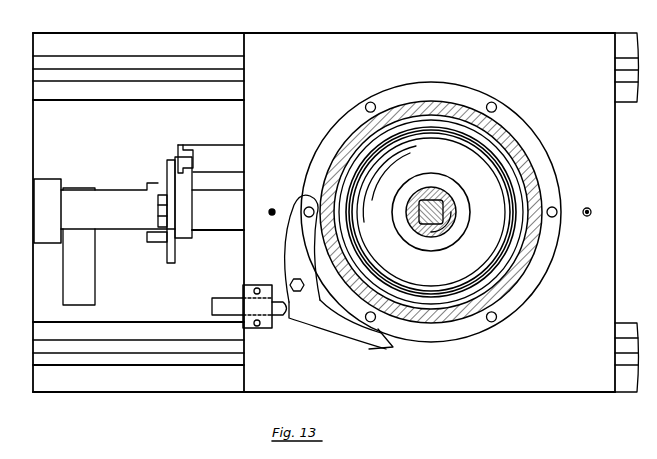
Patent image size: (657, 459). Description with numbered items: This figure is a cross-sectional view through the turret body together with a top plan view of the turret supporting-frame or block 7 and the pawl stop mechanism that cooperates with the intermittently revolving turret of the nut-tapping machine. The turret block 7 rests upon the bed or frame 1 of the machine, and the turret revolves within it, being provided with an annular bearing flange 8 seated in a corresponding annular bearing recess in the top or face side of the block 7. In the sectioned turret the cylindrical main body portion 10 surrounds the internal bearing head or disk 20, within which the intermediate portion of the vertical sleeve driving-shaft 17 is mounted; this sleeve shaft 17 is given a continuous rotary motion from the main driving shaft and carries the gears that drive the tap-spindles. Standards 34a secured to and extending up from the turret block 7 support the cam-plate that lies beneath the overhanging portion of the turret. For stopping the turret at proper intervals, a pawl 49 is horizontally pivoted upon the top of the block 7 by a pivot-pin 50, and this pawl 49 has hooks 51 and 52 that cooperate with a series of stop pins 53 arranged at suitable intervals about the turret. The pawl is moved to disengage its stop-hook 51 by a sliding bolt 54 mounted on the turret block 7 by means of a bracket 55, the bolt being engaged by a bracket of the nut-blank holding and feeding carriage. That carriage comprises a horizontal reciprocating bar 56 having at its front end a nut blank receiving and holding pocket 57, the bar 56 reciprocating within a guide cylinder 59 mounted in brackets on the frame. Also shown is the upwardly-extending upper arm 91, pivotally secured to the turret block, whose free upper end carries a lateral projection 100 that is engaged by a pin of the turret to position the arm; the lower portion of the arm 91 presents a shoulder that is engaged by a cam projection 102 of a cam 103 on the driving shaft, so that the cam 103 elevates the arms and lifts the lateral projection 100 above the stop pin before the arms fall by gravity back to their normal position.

The bed or frame 1 is at (128, 38).
The turret supporting-frame or block 7 is at (605, 253).
The annular bearing flange 8 is at (552, 191).
The cylindrical main body portion 10 is at (530, 172).
The vertical sleeve driving-shaft 17 is at (437, 241).
The internal bearing head or disk 20 is at (497, 258).
The standards 34a is at (270, 212).
The pawl 49 is at (284, 257).
The pivot-pin 50 is at (289, 284).
The stop-hook 51 is at (303, 201).
The hook 52 is at (374, 345).
The stop pins 53 is at (492, 322).
The sliding bolt 54 is at (212, 304).
The bracket 55 is at (243, 298).
The horizontal reciprocating bar 56 is at (105, 202).
The nut blank receiving and holding pocket 57 is at (158, 218).
The guide cylinder 59 is at (43, 186).
The upper arm 91 is at (168, 168).
The lateral projection 100 is at (177, 156).
The cam projection 102 is at (190, 184).
The cam 103 is at (170, 254).